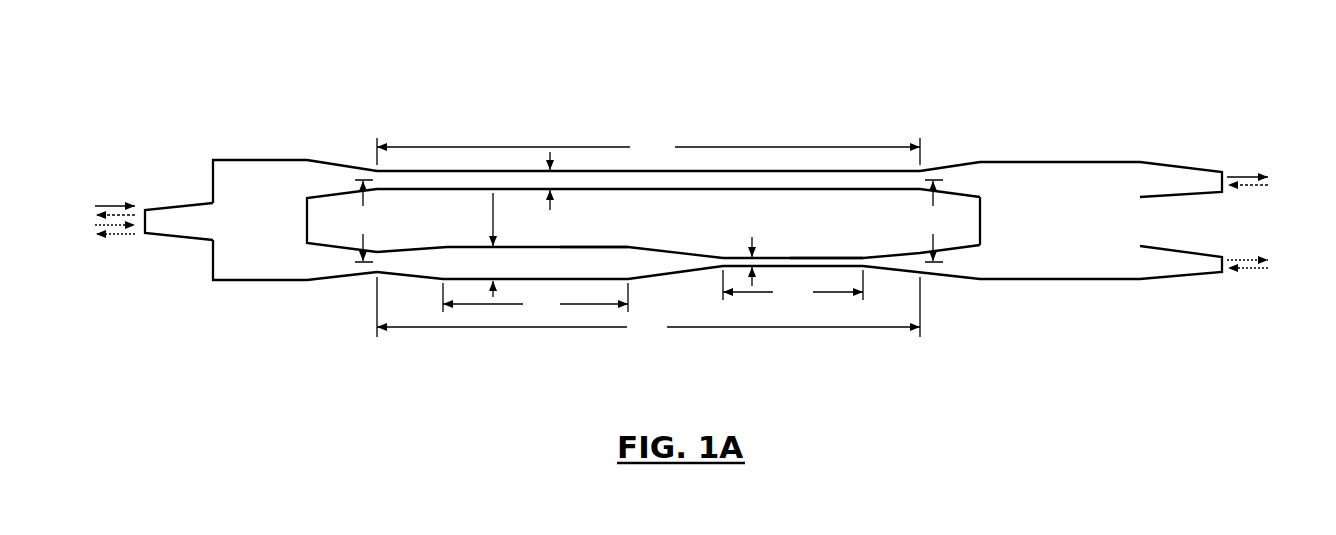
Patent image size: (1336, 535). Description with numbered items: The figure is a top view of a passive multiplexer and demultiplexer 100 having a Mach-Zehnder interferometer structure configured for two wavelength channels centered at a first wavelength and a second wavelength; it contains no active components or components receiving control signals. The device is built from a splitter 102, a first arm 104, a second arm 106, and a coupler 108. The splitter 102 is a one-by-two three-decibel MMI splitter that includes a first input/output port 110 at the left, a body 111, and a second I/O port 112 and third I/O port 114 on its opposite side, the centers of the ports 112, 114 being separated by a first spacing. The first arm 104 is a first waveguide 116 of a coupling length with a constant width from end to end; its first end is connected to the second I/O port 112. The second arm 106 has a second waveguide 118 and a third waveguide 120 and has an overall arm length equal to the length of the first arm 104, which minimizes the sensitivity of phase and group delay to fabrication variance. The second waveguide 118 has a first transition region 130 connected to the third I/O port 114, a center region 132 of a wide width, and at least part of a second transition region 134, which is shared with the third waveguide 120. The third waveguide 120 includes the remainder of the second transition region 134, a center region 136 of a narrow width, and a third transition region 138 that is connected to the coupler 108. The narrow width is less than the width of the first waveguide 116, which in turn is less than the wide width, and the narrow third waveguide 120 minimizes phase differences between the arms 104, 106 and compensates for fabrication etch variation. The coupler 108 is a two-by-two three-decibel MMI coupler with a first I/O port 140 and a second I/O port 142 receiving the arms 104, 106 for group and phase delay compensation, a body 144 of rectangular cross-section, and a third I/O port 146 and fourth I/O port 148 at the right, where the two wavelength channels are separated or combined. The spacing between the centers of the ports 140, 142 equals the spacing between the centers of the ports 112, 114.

The passive multiplexer and demultiplexer 100 is at (1175, 71).
The splitter 102 is at (255, 160).
The first arm 104 is at (755, 139).
The second arm 106 is at (888, 344).
The coupler 108 is at (1043, 162).
The first input/output port 110 is at (173, 203).
The body 111 is at (252, 263).
The second I/O port 112 is at (333, 160).
The third I/O port 114 is at (333, 280).
The first waveguide 116 is at (723, 190).
The second waveguide 118 is at (513, 353).
The third waveguide 120 is at (770, 346).
The first transition region 130 is at (407, 248).
The center region 132 is at (580, 247).
The second transition region 134 is at (670, 277).
The center region 136 is at (807, 258).
The third transition region 138 is at (900, 255).
The first I/O port 140 is at (948, 162).
The second I/O port 142 is at (943, 277).
The body 144 is at (1067, 257).
The third I/O port 146 is at (1175, 164).
The fourth I/O port 148 is at (1175, 278).